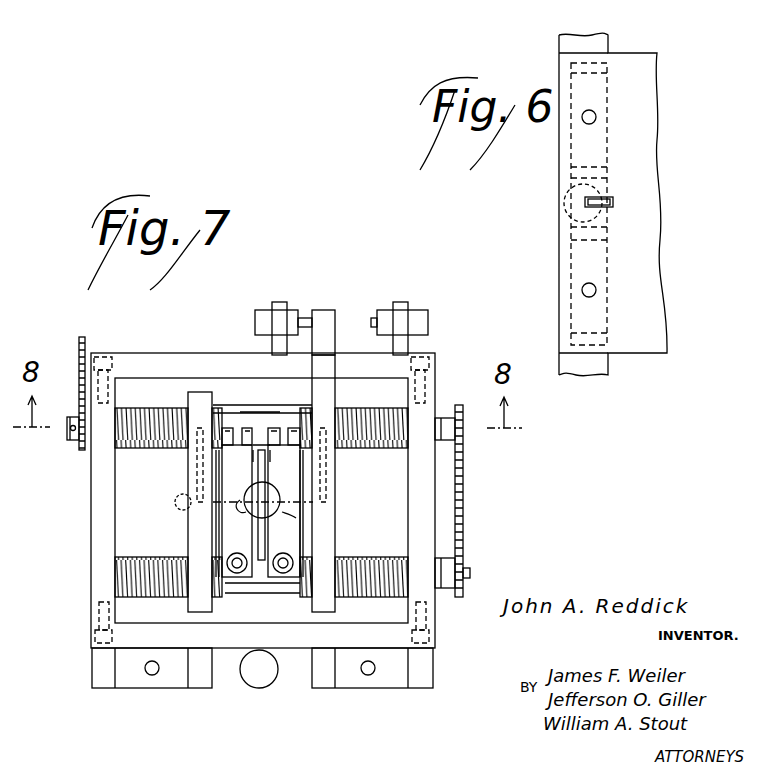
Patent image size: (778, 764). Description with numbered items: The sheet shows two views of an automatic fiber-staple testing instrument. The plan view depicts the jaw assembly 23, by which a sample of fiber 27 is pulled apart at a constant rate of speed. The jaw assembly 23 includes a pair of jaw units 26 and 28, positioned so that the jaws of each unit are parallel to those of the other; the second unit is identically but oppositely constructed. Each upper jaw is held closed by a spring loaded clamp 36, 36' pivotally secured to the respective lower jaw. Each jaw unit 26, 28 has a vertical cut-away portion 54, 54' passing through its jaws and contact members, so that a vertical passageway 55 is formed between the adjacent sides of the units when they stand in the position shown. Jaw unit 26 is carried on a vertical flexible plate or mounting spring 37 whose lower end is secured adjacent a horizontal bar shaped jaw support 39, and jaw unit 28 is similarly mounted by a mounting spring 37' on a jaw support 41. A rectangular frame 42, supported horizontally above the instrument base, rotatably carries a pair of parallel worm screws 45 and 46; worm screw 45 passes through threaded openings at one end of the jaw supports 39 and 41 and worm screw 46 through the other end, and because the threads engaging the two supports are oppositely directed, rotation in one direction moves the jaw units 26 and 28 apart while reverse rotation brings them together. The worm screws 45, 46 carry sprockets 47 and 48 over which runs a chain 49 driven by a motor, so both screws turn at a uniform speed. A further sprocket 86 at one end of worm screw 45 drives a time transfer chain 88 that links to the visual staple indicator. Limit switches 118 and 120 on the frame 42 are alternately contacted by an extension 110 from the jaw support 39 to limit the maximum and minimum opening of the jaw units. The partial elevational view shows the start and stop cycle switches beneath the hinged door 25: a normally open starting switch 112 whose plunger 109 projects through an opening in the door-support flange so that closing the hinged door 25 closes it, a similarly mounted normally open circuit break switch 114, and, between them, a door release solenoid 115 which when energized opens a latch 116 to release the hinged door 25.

In FIG. 7, the jaw assembly 23 is at (82, 541).
In FIG. 6, the hinged door 25 is at (648, 75).
In FIG. 7, the jaw unit 26 is at (245, 476).
In FIG. 7, the fiber sample 27 is at (278, 493).
In FIG. 7, the jaw unit 28 is at (290, 475).
In FIG. 7, the spring loaded clamp 36 is at (241, 586).
In FIG. 7, the spring loaded clamp 36' is at (285, 586).
In FIG. 7, the mounting spring 37 is at (329, 513).
In FIG. 7, the mounting spring 37' is at (191, 513).
In FIG. 7, the jaw support 39 is at (330, 395).
In FIG. 7, the jaw support 41 is at (212, 399).
In FIG. 7, the rectangular frame 42 is at (198, 355).
In FIG. 7, the worm screw 45 is at (168, 407).
In FIG. 7, the worm screw 46 is at (137, 592).
In FIG. 7, the sprocket 47 is at (464, 437).
In FIG. 7, the sprocket 48 is at (465, 565).
In FIG. 7, the chain 49 is at (464, 500).
In FIG. 7, the vertical cut-away portion 54 is at (238, 516).
In FIG. 7, the vertical cut-away portion 54' is at (285, 526).
In FIG. 7, the vertical passageway 55 is at (232, 492).
In FIG. 7, the sprocket 86 is at (72, 447).
In FIG. 7, the time transfer chain 88 is at (85, 342).
In FIG. 6, the plunger 109 is at (596, 117).
In FIG. 7, the extension 110 is at (326, 310).
In FIG. 7, the starting switch 112 is at (122, 689).
In FIG. 6, the starting switch 112 is at (608, 66).
In FIG. 7, the circuit break switch 114 is at (355, 689).
In FIG. 6, the circuit break switch 114 is at (600, 307).
In FIG. 7, the door release solenoid 115 is at (255, 676).
In FIG. 6, the door release solenoid 115 is at (598, 216).
In FIG. 6, the latch 116 is at (613, 202).
In FIG. 7, the limit switch 118 is at (262, 305).
In FIG. 7, the limit switch 120 is at (375, 312).